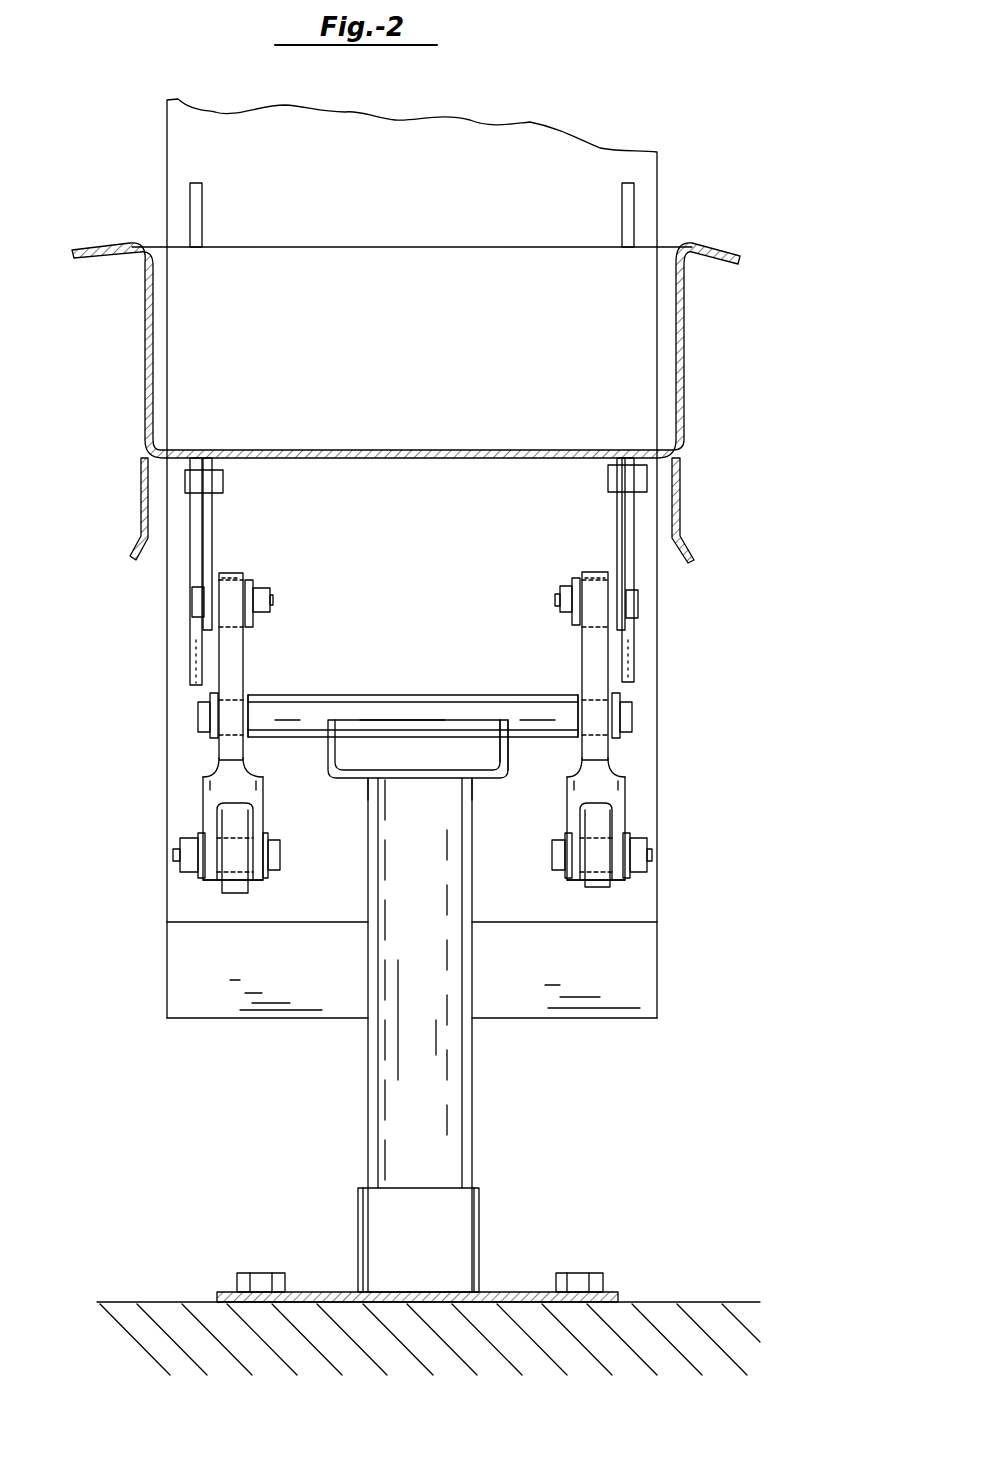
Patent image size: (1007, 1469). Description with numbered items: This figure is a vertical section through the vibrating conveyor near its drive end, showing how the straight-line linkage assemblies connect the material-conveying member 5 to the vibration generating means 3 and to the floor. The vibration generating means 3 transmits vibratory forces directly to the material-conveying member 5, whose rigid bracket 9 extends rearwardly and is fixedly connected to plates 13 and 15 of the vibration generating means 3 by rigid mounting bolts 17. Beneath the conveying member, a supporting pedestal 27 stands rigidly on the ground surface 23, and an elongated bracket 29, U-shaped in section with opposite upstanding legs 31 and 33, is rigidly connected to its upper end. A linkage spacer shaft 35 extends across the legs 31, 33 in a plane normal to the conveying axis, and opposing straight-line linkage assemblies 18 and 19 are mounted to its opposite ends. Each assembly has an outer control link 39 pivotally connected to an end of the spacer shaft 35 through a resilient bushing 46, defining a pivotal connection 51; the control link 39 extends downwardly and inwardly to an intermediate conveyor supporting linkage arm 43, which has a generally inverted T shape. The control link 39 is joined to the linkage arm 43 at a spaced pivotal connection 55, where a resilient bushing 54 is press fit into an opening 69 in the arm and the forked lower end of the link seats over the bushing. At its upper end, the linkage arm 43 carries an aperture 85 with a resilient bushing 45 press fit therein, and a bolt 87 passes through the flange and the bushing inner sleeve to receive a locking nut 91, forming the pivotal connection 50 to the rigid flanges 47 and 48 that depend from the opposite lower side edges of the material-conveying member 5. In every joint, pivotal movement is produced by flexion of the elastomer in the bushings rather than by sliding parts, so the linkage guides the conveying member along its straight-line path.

The vibration generating means 3 is at (419, 218).
The material-conveying member 5 is at (680, 345).
The rigid bracket 9 is at (213, 537).
The plate 13 is at (195, 655).
The plate 15 is at (633, 215).
The rigid mounting bolt 17 is at (190, 480).
The straight-line linkage assembly 18 is at (200, 790).
The straight-line linkage assembly 19 is at (618, 750).
The ground surface 23 is at (707, 1302).
The supporting pedestal 27 is at (474, 1130).
The elongated bracket 29 is at (478, 782).
The upstanding leg 31 is at (508, 750).
The upstanding leg 33 is at (326, 745).
The linkage spacer shaft 35 is at (355, 695).
The outer control link 39 is at (227, 760).
The conveyor supporting linkage arm 43 is at (232, 892).
The resilient bushing 45 is at (244, 583).
The resilient bushing 46 is at (246, 695).
The rigid flange 47 is at (140, 520).
The rigid flange 48 is at (683, 517).
The pivotal connection 50 is at (412, 561).
The pivotal connection 51 is at (196, 722).
The resilient bushing 54 is at (218, 883).
The pivotal connection 55 is at (178, 864).
The opening 69 is at (233, 830).
The aperture 85 is at (235, 570).
The bolt 87 is at (192, 602).
The locking nut 91 is at (266, 622).